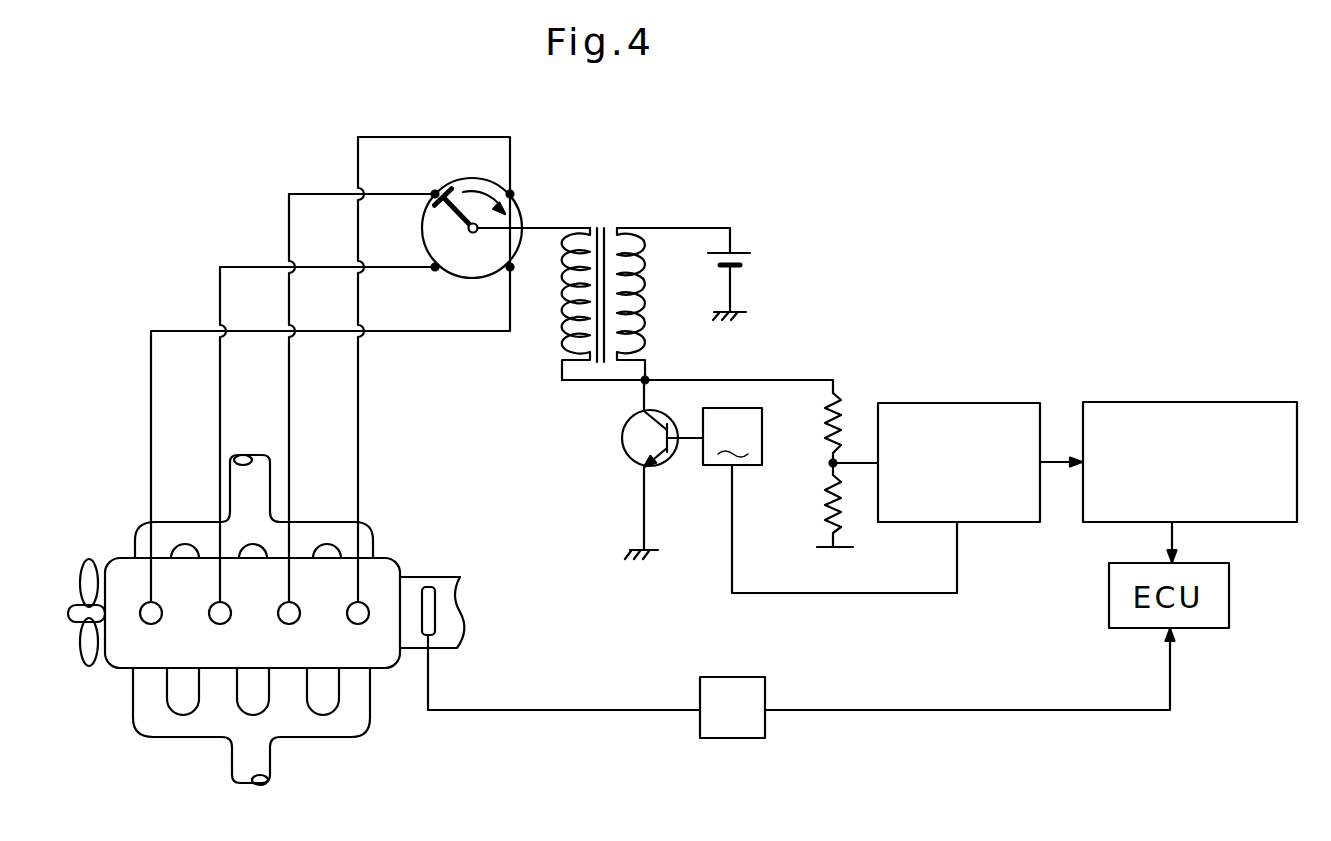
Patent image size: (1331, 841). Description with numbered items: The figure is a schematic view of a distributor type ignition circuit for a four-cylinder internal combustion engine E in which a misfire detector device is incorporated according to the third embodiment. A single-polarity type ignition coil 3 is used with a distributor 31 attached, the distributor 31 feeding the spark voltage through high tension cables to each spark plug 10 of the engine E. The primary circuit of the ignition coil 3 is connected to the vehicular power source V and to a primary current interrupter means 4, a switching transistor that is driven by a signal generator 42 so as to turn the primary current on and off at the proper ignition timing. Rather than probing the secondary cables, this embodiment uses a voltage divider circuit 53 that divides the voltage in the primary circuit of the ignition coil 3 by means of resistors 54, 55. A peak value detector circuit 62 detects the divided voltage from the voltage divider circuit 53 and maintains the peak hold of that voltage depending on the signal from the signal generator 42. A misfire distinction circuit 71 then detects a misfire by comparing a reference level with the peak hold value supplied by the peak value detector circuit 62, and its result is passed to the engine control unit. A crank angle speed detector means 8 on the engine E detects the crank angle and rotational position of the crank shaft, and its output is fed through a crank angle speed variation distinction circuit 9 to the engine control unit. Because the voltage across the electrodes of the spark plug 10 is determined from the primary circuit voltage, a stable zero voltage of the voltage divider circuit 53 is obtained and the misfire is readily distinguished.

The distributor 31 is at (520, 210).
The single-polarity type ignition coil 3 is at (624, 206).
The vehicular power source V is at (742, 252).
The primary current interrupter means 4 is at (598, 428).
The signal generator 42 is at (732, 436).
The voltage divider circuit 53 is at (813, 438).
The resistor 54 is at (838, 420).
The resistor 55 is at (830, 503).
The peak value detector circuit 62 is at (1003, 403).
The misfire distinction circuit 71 is at (1256, 402).
The crank angle speed detector means 8 is at (428, 587).
The crank angle speed variation distinction circuit 9 is at (767, 728).
The spark plug 10 is at (142, 628).
The internal combustion engine E is at (370, 718).